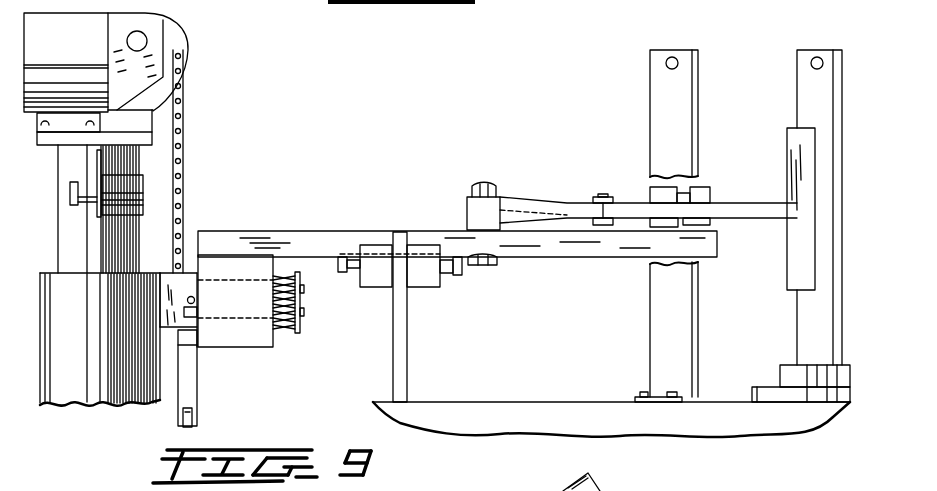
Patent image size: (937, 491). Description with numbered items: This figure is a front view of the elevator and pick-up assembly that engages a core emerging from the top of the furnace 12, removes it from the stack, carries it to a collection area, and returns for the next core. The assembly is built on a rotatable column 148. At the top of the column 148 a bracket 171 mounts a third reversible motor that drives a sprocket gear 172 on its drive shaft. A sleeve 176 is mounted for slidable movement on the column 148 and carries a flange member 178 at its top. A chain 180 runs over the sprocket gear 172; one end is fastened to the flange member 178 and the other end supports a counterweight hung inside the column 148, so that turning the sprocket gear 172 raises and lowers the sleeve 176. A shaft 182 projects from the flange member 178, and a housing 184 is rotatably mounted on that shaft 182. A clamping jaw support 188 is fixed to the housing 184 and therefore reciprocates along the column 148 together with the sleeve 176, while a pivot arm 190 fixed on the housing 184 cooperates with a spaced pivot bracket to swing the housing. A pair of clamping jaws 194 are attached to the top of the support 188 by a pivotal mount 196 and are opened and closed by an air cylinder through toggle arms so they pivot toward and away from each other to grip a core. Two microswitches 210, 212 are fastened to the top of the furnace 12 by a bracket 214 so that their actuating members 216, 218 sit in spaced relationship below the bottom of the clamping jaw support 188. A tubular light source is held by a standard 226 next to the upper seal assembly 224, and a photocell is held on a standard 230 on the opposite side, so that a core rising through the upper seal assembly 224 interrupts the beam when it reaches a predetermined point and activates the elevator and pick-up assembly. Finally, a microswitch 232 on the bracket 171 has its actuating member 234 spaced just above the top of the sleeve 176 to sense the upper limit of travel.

The furnace 12 is at (545, 412).
The column 148 is at (65, 245).
The bracket 171 is at (102, 157).
The sprocket gear 172 is at (170, 21).
The sleeve 176 is at (82, 362).
The flange member 178 is at (172, 287).
The chain 180 is at (184, 128).
The shaft 182 is at (297, 315).
The housing 184 is at (262, 335).
The clamping jaw support 188 is at (305, 232).
The pivot arm 190 is at (188, 400).
The clamping jaws 194 is at (570, 203).
The pivotal mount 196 is at (483, 183).
The microswitch 210 is at (422, 283).
The microswitch 212 is at (372, 282).
The bracket 214 is at (408, 380).
The actuating member 216 is at (457, 275).
The actuating member 218 is at (338, 272).
The upper seal assembly 224 is at (757, 385).
The standard 226 is at (653, 95).
The standard 230 is at (803, 82).
The microswitch 232 is at (138, 207).
The actuating member 234 is at (66, 190).